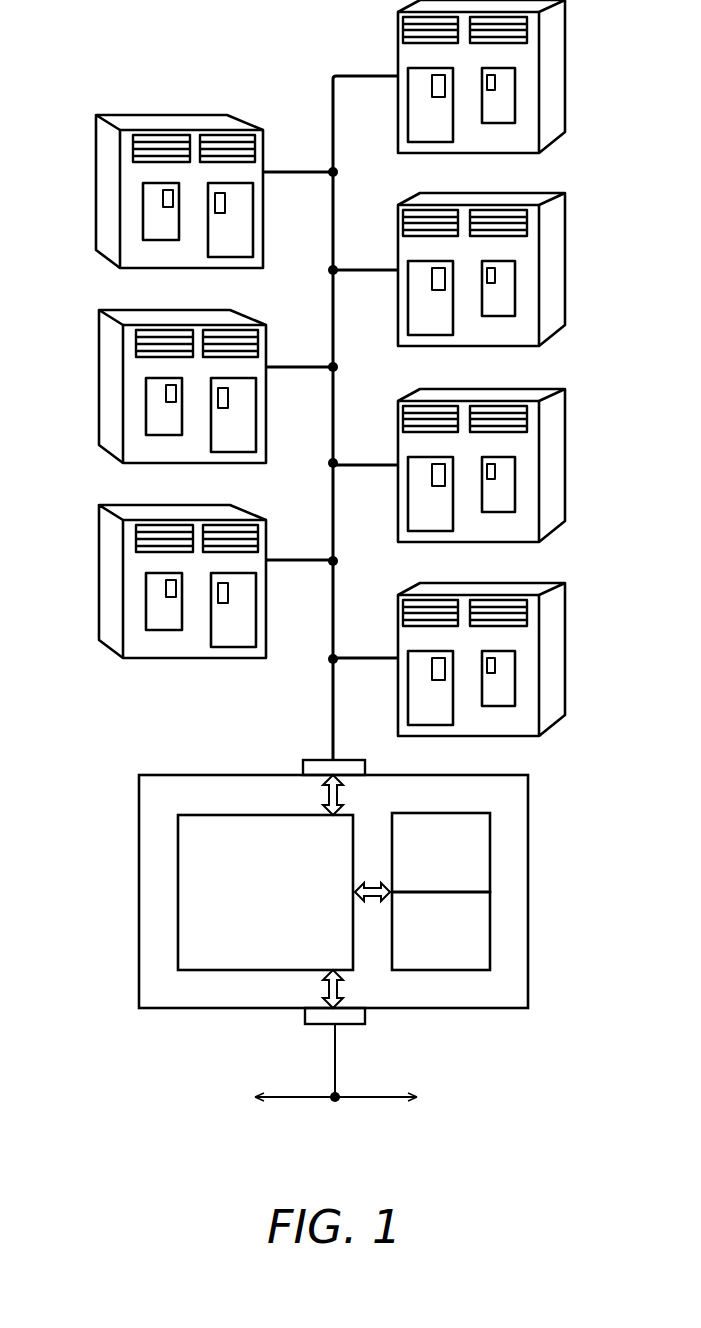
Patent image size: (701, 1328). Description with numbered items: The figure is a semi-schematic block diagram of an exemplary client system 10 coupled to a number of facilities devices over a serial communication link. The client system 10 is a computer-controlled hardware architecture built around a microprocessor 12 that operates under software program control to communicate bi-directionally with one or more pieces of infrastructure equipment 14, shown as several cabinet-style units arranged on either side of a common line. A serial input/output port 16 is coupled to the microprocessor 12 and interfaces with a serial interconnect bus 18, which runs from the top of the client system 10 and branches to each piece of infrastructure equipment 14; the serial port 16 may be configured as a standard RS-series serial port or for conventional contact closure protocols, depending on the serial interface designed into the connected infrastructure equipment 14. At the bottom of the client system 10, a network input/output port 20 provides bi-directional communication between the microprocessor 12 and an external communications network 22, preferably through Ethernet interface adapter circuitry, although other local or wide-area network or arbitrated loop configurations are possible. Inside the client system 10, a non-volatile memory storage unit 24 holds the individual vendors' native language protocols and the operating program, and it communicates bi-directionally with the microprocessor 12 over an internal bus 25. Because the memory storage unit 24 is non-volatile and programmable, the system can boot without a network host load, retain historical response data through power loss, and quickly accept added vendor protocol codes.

The client system 10 is at (139, 813).
The microprocessor 12 is at (178, 893).
The infrastructure equipment 14 is at (95, 190).
The serial input/output port 16 is at (318, 758).
The serial interconnect bus 18 is at (330, 76).
The network input/output port 20 is at (305, 1025).
The external communications network 22 is at (292, 1100).
The non-volatile memory storage unit 24 is at (458, 972).
The internal bus 25 is at (370, 878).